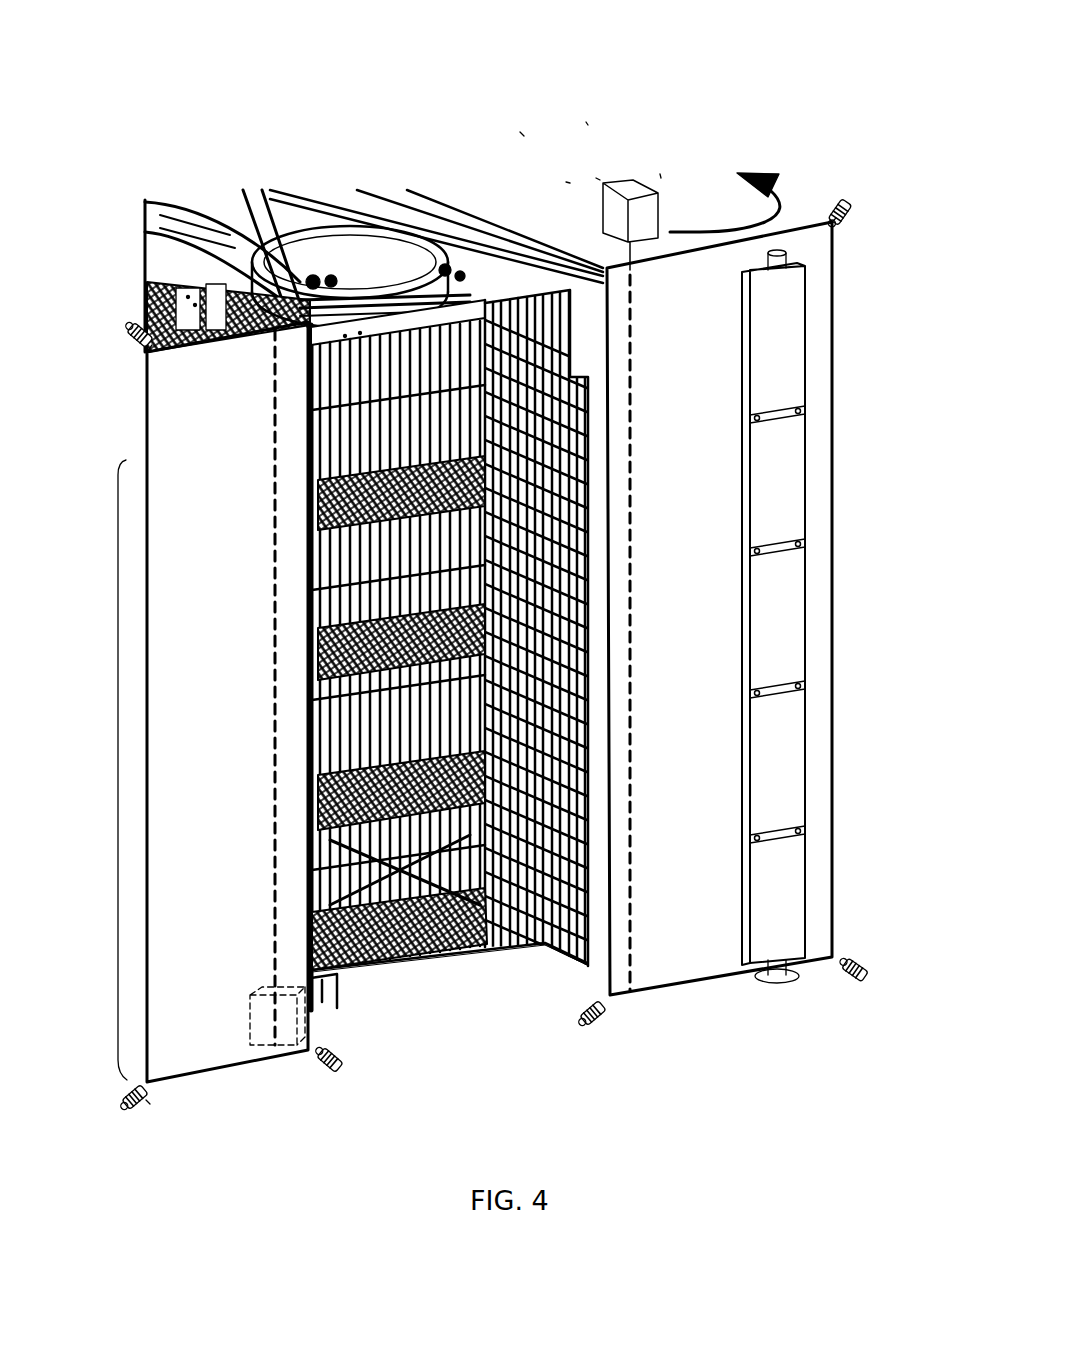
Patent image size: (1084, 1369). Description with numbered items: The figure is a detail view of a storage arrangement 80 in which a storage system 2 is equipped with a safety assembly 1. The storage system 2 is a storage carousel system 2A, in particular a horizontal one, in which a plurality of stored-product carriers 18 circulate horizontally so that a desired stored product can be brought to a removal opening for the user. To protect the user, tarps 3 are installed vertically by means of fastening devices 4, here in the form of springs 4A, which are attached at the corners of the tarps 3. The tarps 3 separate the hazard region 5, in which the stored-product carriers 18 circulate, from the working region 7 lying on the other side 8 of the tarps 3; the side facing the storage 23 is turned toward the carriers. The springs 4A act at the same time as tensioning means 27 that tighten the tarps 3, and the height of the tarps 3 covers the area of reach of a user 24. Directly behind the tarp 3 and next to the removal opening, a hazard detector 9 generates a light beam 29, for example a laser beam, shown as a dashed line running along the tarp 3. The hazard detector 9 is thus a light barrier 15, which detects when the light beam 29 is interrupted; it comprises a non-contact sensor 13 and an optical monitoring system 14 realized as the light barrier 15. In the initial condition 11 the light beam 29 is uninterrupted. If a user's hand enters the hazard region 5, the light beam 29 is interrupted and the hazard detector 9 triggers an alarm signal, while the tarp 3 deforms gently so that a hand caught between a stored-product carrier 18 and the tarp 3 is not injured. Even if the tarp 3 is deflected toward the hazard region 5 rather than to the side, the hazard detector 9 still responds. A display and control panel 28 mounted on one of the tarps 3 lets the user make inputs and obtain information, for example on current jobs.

The safety assembly 1 is at (795, 130).
The storage system 2 is at (390, 313).
The storage carousel system 2A is at (458, 167).
The tarp 3 is at (842, 625).
The fastening device 4 is at (592, 242).
The spring 4A is at (152, 1104).
The hazard region 5 is at (565, 182).
The working region 7 is at (513, 1084).
The other side 8 is at (566, 955).
The hazard detector 9 is at (629, 177).
The initial condition 11 is at (587, 120).
The non-contact sensor 13 is at (595, 178).
The optical monitoring system 14 is at (662, 172).
The light barrier 15 is at (522, 130).
The stored-product carrier 18 is at (523, 293).
The side facing the storage 23 is at (510, 215).
The area of reach of a user 24 is at (102, 770).
The tensioning means 27 is at (132, 347).
The display and control panel 28 is at (818, 345).
The light beam 29 is at (268, 418).
The storage arrangement 80 is at (283, 170).